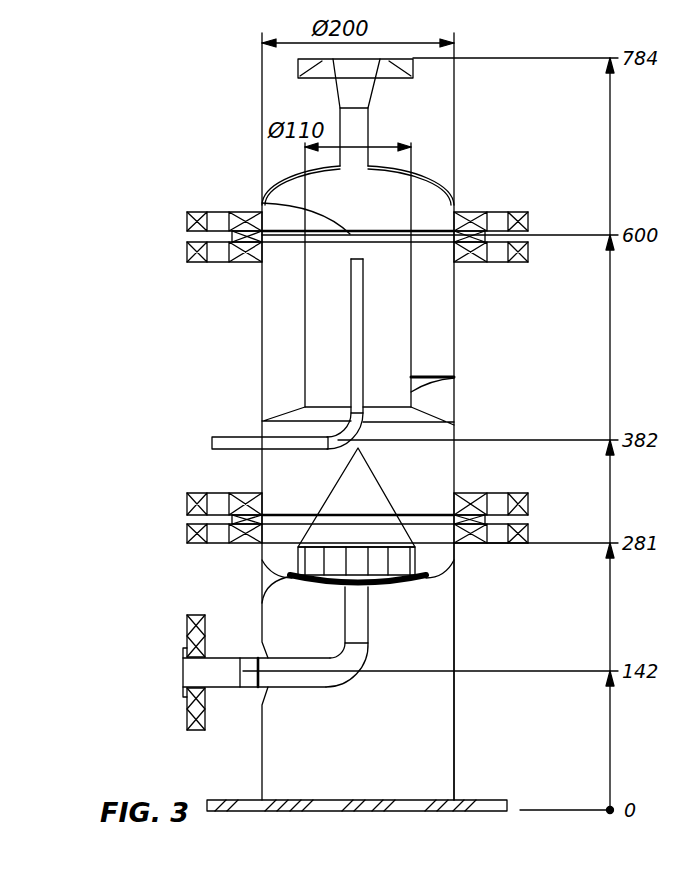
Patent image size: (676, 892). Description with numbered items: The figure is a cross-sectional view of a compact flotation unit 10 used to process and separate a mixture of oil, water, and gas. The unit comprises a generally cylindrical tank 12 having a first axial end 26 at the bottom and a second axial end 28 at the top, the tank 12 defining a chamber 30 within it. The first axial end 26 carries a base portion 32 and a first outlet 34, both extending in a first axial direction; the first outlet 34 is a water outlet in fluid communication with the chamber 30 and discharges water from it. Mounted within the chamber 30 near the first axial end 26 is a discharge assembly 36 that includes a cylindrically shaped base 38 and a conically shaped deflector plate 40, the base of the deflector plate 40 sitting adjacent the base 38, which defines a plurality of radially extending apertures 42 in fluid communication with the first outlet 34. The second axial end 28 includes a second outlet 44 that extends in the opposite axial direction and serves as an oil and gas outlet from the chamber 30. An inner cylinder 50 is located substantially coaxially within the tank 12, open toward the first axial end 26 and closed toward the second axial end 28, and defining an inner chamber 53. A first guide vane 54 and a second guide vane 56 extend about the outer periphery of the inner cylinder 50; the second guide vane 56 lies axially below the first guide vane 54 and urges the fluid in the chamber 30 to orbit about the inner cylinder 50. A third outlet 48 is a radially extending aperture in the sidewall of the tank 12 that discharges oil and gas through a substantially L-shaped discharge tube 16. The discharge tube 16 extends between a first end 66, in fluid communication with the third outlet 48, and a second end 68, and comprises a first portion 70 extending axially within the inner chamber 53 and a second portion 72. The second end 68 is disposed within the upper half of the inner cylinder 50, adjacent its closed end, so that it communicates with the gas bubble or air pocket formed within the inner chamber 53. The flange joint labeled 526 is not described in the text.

The compact flotation unit 10 is at (140, 106).
The tank 12 is at (262, 358).
The discharge tube 16 is at (376, 329).
The first axial end 26 is at (262, 603).
The second axial end 28 is at (442, 182).
The chamber 30 is at (322, 323).
The base portion 32 is at (454, 737).
The first outlet 34 is at (367, 589).
The discharge assembly 36 is at (300, 501).
The base 38 is at (298, 558).
The deflector plate 40 is at (377, 482).
The radially extending apertures 42 is at (380, 565).
The second outlet 44 is at (338, 163).
The third outlet 48 is at (262, 436).
The inner cylinder 50 is at (305, 368).
The inner chamber 53 is at (325, 300).
The first guide vane 54 is at (423, 370).
The second guide vane 56 is at (285, 412).
The first end 66 is at (262, 452).
The second end 68 is at (350, 259).
The first portion 70 is at (351, 351).
The second portion 72 is at (330, 425).
The upper flange assembly 526 is at (262, 212).